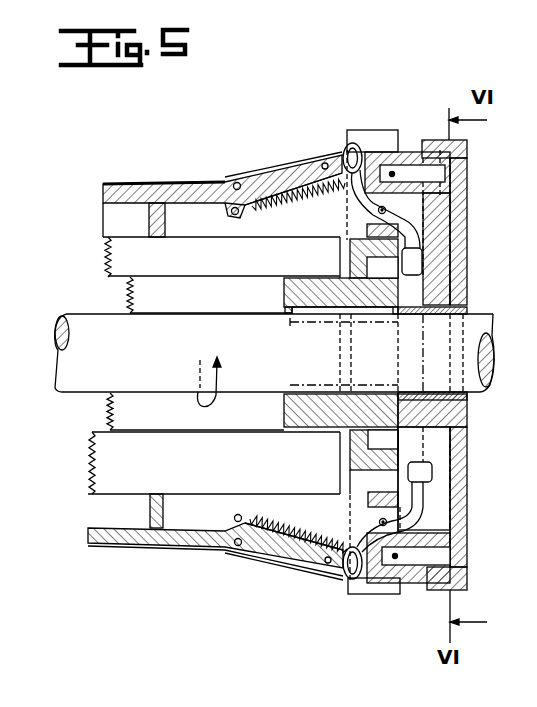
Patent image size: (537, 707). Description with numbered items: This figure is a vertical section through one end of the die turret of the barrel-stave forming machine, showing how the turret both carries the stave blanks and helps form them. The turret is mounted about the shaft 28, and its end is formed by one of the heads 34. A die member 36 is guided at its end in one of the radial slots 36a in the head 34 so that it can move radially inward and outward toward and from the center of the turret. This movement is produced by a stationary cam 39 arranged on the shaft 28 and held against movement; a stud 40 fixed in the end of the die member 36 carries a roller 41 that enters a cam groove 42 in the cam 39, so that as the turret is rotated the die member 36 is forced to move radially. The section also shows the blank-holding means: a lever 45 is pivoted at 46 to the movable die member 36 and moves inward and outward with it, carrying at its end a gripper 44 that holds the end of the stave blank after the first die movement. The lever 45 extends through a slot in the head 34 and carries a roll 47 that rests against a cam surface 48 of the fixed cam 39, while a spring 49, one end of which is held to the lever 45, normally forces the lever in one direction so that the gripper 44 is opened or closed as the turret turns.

The shaft 28 is at (457, 358).
The heads 34 is at (367, 137).
The die member 36 is at (190, 197).
The radial slots 36a is at (348, 520).
The stationary cams 39 is at (458, 522).
The studs 40 is at (407, 165).
The rollers 41 is at (462, 147).
The cam groove 42 is at (465, 573).
The grippers 44 is at (345, 148).
The levers 45 is at (360, 200).
The pivot 46 is at (387, 209).
The roll 47 is at (417, 265).
The cam surface 48 is at (440, 221).
The spring 49 is at (288, 205).